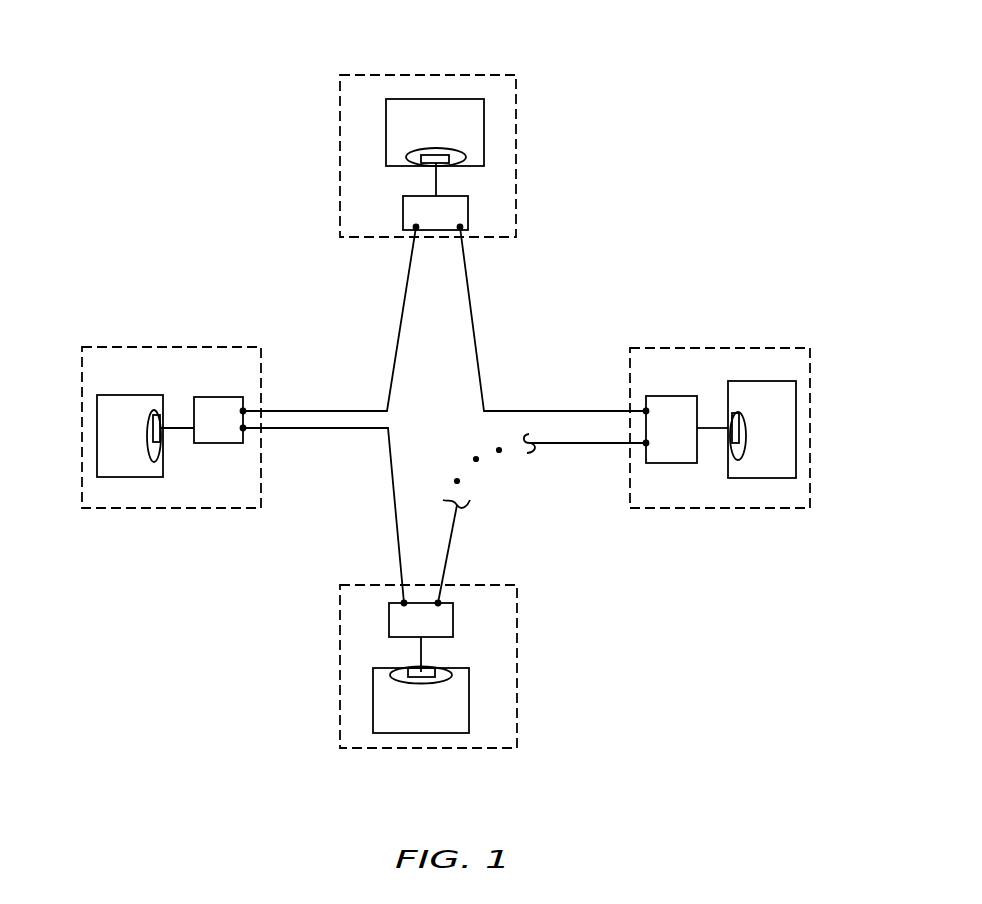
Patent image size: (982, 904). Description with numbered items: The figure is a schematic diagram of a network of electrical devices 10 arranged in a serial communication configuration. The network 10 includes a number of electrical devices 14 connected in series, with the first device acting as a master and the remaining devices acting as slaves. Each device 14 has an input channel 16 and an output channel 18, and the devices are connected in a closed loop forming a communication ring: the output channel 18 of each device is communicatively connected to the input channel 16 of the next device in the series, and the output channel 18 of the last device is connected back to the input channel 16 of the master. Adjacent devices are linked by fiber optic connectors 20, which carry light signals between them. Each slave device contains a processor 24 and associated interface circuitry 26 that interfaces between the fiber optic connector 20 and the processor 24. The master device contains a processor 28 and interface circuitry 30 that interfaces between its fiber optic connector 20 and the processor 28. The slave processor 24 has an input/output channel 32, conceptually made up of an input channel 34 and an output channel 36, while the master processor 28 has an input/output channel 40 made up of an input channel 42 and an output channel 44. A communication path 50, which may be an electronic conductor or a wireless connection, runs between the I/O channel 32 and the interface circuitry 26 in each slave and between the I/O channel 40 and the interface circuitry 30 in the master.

The network of electrical devices 10 is at (724, 740).
The electrical device 14 is at (553, 745).
The input channel 16 is at (403, 213).
The output channel 18 is at (461, 228).
The fiber optic connector 20 is at (330, 411).
The processor 24 is at (484, 116).
The interface circuitry 26 is at (460, 210).
The processor 28 is at (122, 477).
The interface circuitry 30 is at (210, 397).
The input/output channel 32 is at (412, 150).
The input channel 34 is at (423, 160).
The output channel 36 is at (440, 150).
The input/output channel 40 is at (157, 460).
The input channel 42 is at (145, 437).
The output channel 44 is at (151, 420).
The communication path 50 is at (440, 186).